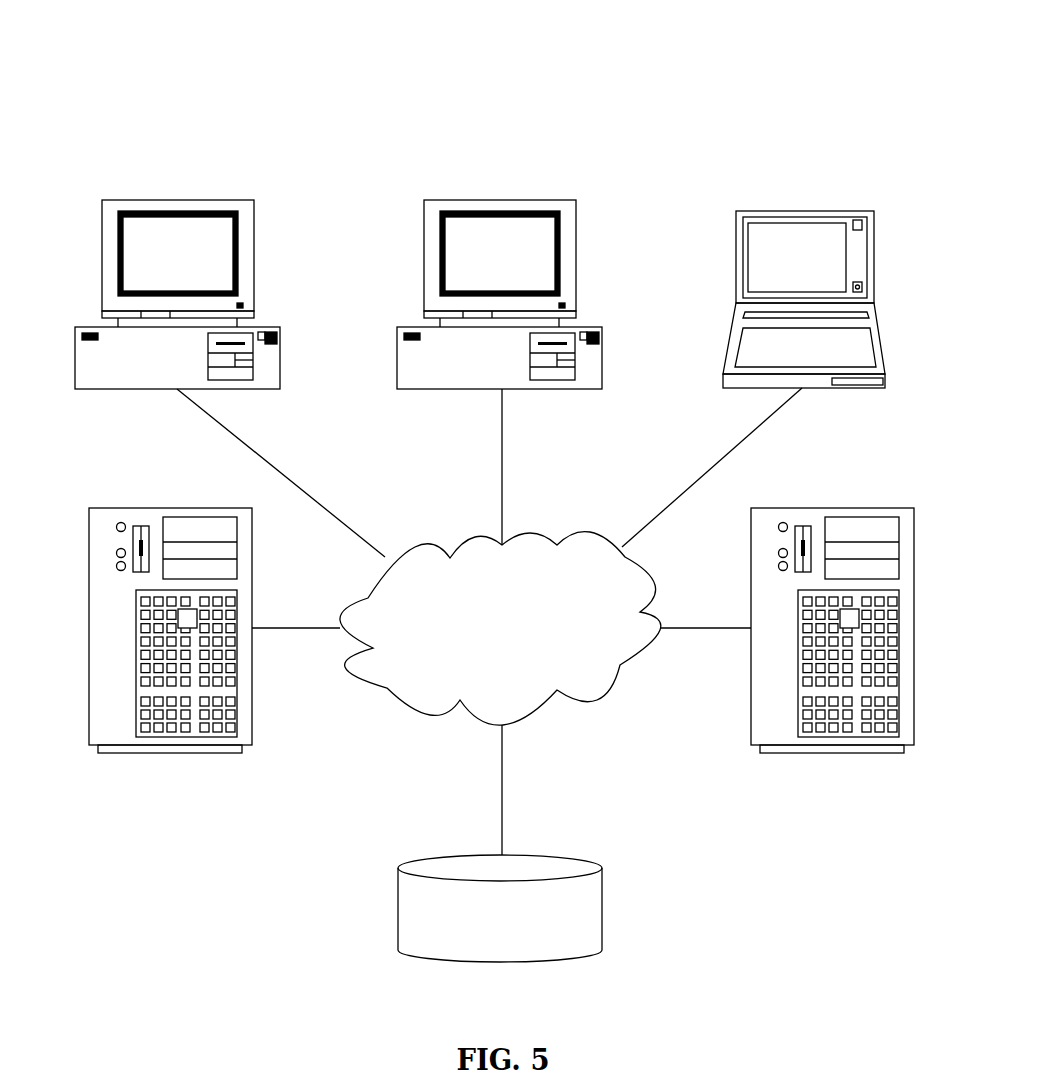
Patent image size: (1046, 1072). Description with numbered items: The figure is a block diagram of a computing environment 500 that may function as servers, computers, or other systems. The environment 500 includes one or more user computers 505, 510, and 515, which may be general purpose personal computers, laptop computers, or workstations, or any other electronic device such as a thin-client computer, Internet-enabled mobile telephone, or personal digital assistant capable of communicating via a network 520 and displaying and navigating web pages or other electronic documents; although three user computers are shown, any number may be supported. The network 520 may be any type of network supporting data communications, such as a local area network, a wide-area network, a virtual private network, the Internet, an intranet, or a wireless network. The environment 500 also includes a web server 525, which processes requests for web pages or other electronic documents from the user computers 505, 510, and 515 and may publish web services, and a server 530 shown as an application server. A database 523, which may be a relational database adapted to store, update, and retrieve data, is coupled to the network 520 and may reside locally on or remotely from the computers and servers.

The computing environment 500 is at (275, 72).
The user computer 505 is at (257, 389).
The user computer 510 is at (573, 389).
The user computer 515 is at (820, 388).
The network 520 is at (578, 705).
The database 523 is at (602, 915).
The web server 525 is at (252, 713).
The application server 530 is at (751, 713).